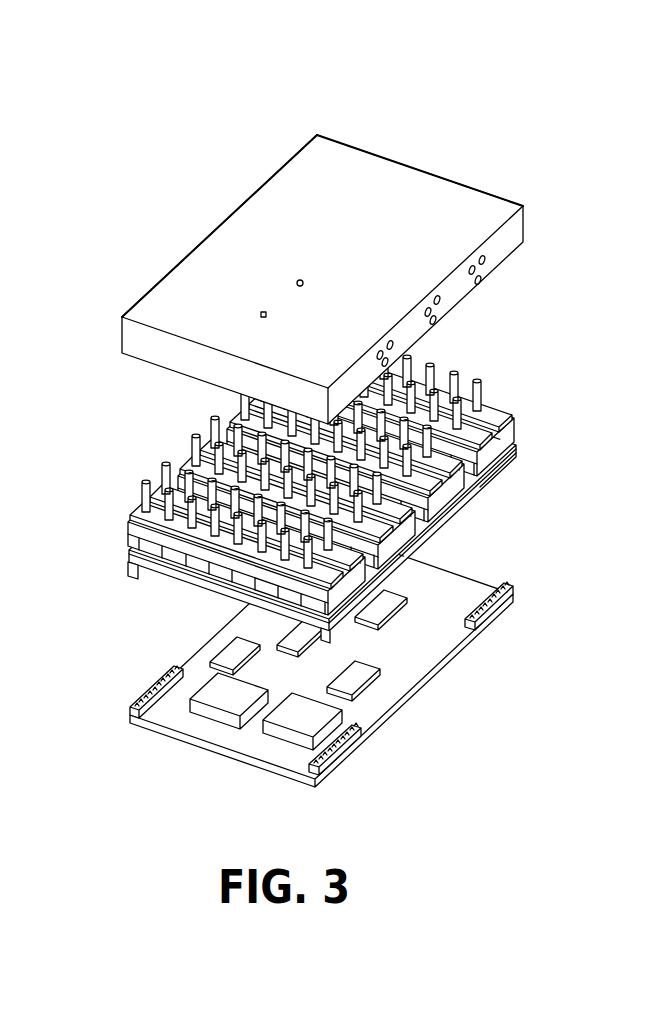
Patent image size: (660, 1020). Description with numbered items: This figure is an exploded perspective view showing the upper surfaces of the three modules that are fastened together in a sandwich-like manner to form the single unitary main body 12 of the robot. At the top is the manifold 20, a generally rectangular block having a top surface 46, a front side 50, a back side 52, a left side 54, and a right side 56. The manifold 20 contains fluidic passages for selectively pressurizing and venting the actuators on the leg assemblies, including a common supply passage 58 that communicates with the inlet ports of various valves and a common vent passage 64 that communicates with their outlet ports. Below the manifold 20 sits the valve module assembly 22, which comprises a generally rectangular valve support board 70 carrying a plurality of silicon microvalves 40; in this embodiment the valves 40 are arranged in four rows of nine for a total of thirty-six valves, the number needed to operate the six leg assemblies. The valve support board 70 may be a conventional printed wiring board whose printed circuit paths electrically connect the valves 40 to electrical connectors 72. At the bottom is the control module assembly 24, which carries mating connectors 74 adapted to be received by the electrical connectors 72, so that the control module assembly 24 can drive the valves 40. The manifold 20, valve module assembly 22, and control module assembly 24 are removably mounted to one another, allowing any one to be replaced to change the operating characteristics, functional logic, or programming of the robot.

The main body 12 is at (197, 148).
The manifold 20 is at (349, 263).
The valve module assembly 22 is at (337, 509).
The control module assembly 24 is at (363, 658).
The silicon microvalves 40 is at (520, 415).
The top surface 46 is at (425, 185).
The front side 50 is at (165, 362).
The back side 52 is at (368, 150).
The left side 54 is at (507, 248).
The right side 56 is at (186, 252).
The common supply passage 58 is at (306, 283).
The common vent passage 64 is at (270, 315).
The valve support board 70 is at (170, 577).
The electrical connectors 72 is at (508, 467).
The mating connectors 74 is at (515, 593).